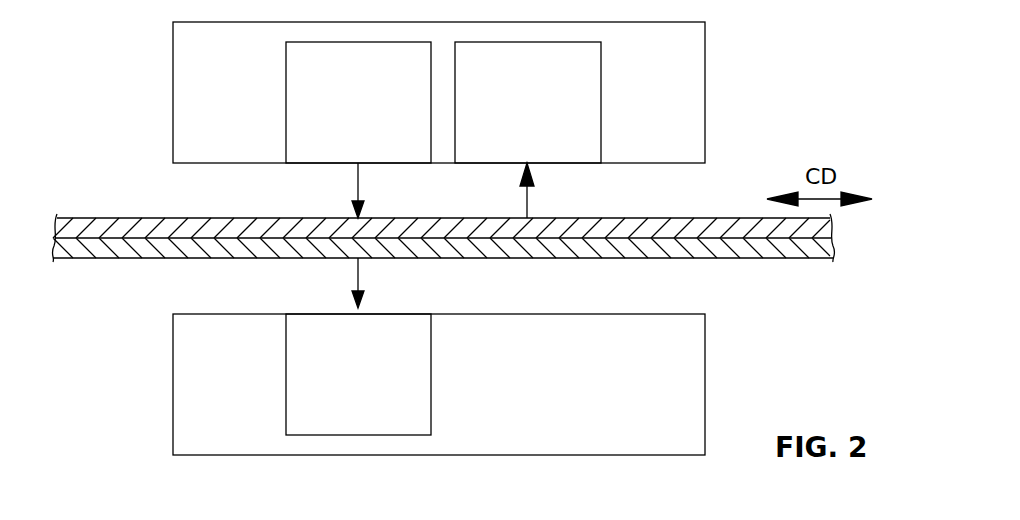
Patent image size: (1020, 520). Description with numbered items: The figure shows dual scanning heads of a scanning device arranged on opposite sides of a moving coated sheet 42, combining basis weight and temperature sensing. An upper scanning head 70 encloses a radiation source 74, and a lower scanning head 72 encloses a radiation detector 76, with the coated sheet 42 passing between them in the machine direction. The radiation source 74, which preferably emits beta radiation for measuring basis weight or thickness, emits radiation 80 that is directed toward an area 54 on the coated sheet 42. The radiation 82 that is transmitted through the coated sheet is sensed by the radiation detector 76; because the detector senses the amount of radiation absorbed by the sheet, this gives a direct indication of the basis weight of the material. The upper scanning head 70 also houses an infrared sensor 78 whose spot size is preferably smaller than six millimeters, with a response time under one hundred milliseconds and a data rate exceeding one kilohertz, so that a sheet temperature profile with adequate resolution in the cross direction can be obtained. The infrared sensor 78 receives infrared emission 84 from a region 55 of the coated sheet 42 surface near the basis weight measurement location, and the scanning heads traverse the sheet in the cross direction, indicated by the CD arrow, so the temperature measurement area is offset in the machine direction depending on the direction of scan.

The coated sheet 42 is at (718, 216).
The area 54 is at (330, 210).
The second surface of web 55 is at (555, 212).
The scanning head 70 is at (705, 36).
The scanning head 72 is at (705, 349).
The radiation source 74 is at (345, 143).
The radiation detector 76 is at (345, 417).
The infrared sensor 78 is at (515, 143).
The radiation 80 is at (357, 172).
The transmitted radiation 82 is at (364, 270).
The IR emission from web 84 is at (531, 200).